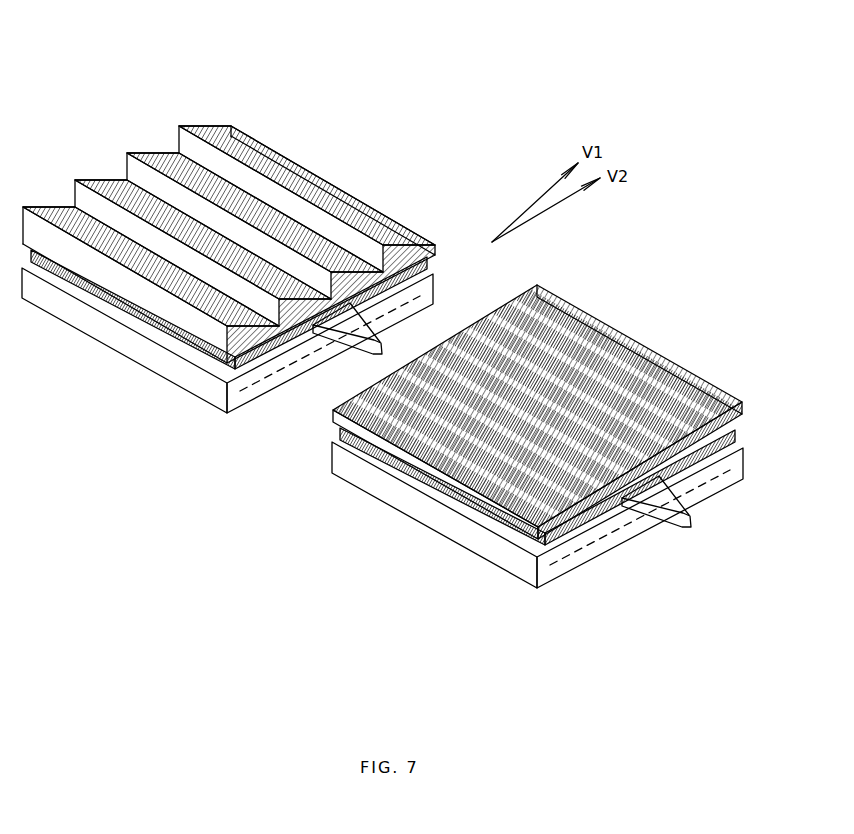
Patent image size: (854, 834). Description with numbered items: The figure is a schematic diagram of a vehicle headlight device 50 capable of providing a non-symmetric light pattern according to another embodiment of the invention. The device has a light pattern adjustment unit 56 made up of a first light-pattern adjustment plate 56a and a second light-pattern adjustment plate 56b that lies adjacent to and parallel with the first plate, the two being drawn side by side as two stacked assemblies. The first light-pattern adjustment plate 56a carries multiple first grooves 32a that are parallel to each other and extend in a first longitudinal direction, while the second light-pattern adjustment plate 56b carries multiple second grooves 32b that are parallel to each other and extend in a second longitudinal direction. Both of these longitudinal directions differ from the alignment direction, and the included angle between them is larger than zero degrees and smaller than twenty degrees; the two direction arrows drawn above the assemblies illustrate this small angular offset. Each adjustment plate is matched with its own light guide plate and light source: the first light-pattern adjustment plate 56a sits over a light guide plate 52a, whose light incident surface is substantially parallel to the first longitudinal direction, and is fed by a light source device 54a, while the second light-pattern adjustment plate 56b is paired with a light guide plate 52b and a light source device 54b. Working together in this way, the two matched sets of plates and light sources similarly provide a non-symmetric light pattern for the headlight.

The vehicle headlight device 50 is at (74, 25).
The light pattern adjustment unit 56 is at (382, 357).
The first light-pattern adjustment plate 56a is at (318, 172).
The second light-pattern adjustment plate 56b is at (655, 351).
The light guide plate 52a is at (125, 318).
The first grooves 32a is at (150, 328).
The light source device 54a is at (370, 352).
The light guide plate 52b is at (410, 478).
The second grooves 32b is at (460, 497).
The light source device 54b is at (658, 522).